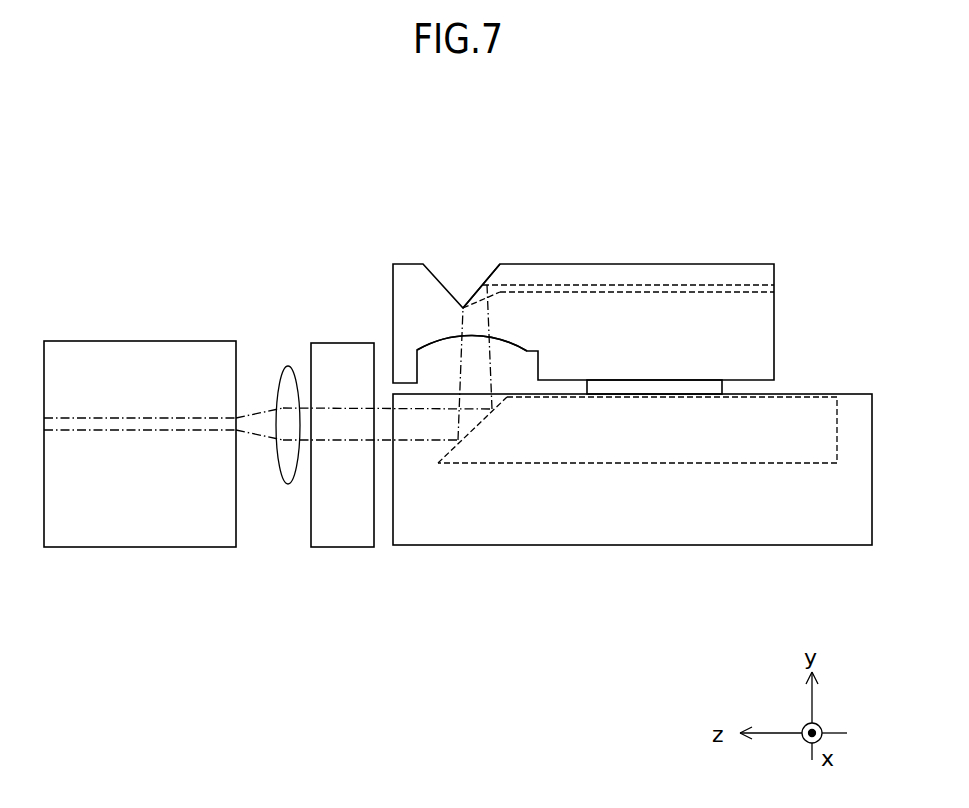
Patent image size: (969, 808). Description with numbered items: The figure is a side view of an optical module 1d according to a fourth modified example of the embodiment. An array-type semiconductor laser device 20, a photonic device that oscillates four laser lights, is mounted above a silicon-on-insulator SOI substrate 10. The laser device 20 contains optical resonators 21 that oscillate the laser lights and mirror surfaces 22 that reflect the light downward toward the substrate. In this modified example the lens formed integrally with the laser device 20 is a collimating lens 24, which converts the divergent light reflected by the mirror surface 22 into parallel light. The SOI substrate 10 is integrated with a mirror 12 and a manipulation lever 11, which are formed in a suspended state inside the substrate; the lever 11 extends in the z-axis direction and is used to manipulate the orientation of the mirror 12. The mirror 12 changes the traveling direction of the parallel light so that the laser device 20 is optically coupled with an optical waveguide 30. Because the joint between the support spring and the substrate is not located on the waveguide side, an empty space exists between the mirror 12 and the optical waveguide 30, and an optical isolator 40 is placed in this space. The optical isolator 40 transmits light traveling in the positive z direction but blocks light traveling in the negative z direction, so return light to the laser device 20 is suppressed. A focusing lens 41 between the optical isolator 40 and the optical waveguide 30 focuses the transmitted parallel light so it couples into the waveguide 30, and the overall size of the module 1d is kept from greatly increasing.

The optical module 1d is at (625, 200).
The SOI substrate 10 is at (856, 408).
The manipulation lever 11 is at (583, 465).
The mirror 12 is at (487, 420).
The array-type semiconductor laser device 20 is at (731, 263).
The optical resonator 21 is at (780, 286).
The mirror surface 22 is at (478, 288).
The collimating lens 24 is at (439, 358).
The optical waveguide 30 is at (110, 417).
The optical isolator 40 is at (342, 346).
The focusing lens 41 is at (289, 375).